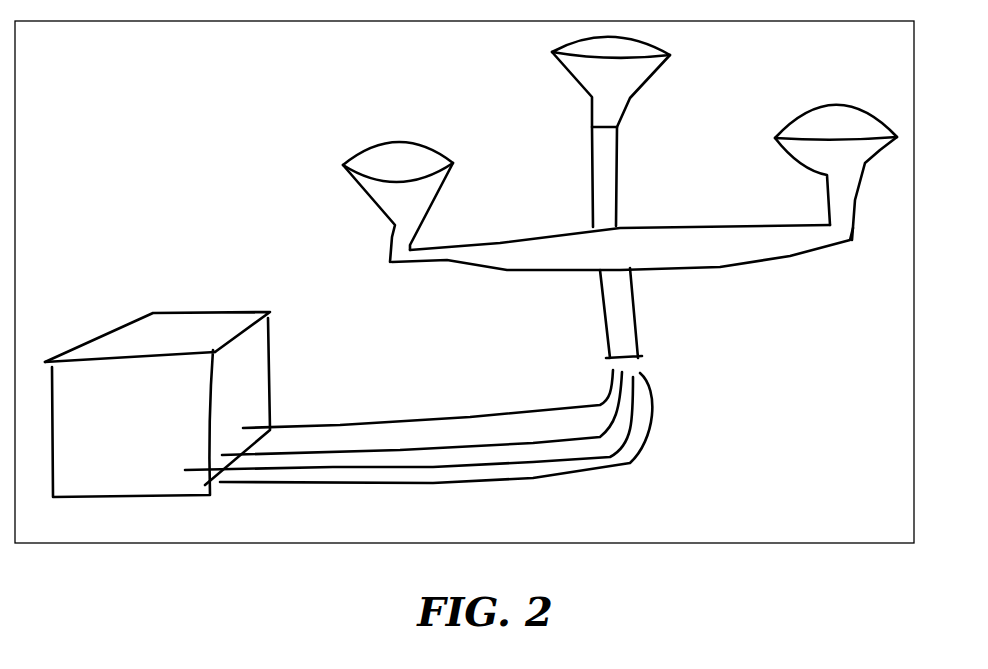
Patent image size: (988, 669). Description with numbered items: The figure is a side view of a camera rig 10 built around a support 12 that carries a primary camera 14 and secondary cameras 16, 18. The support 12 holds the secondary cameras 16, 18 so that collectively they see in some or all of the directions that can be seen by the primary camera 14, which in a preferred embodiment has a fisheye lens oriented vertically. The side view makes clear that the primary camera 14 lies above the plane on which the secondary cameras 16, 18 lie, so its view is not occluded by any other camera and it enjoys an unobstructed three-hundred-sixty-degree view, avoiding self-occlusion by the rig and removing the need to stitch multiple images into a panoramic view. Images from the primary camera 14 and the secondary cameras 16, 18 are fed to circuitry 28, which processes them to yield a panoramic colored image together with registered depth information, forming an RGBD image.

The camera rig 10 is at (846, 499).
The support 12 is at (622, 291).
The primary camera 14 is at (622, 83).
The secondary camera 16 is at (414, 208).
The secondary camera 18 is at (832, 163).
The circuitry 28 is at (113, 428).